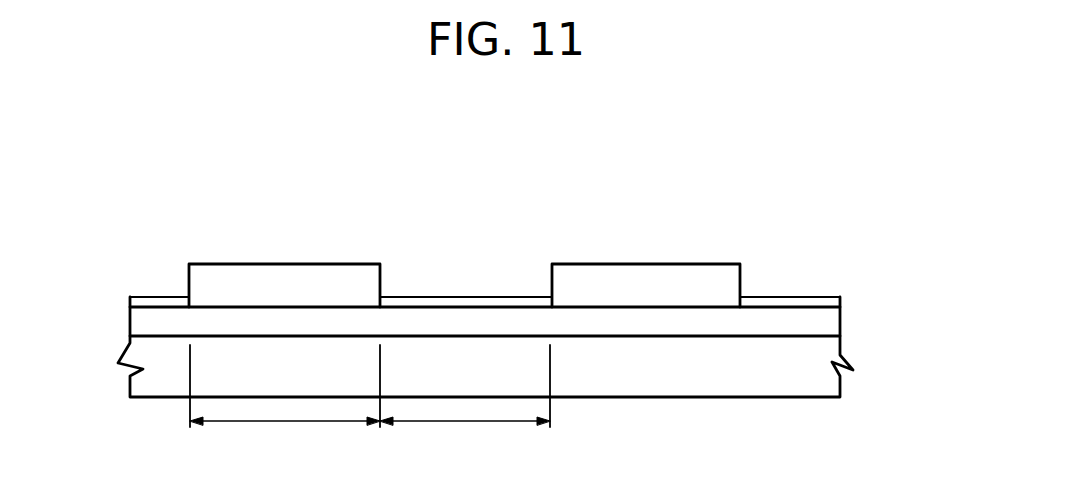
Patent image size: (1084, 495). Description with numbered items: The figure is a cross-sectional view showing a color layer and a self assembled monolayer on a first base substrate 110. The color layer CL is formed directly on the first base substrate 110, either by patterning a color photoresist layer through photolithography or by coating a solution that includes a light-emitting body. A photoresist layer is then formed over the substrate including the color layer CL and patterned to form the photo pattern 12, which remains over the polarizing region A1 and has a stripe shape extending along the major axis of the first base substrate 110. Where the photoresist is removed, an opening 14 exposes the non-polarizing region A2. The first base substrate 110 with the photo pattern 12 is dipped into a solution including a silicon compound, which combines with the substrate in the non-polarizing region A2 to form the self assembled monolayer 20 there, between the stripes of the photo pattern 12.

The first base substrate 110 is at (837, 384).
The color layer CL is at (837, 321).
The self assembled monolayer 20 is at (457, 305).
The opening 14 is at (787, 277).
The photo pattern 12 is at (657, 275).
The polarizing region A1 is at (285, 399).
The non-polarizing region A2 is at (465, 399).